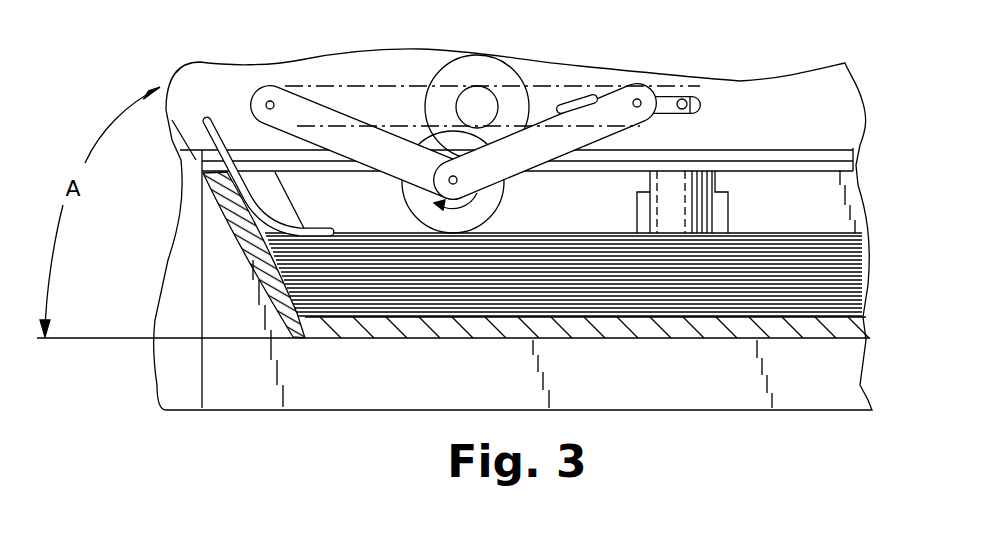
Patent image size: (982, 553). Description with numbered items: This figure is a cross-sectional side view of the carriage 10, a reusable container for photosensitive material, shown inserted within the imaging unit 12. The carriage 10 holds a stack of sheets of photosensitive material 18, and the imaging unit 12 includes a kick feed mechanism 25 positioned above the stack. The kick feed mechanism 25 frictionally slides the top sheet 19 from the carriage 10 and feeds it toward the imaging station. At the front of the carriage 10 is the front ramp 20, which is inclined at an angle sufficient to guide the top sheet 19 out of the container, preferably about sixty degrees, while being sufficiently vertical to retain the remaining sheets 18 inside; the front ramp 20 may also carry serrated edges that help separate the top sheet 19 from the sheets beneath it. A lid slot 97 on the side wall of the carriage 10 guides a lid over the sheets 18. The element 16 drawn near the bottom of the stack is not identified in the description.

The base plate 10 is at (667, 340).
The housing 12 is at (668, 76).
The bottom sheet 16 is at (807, 317).
The sheet stack 18 is at (591, 266).
The guide member 19 is at (214, 128).
The inclined plate 20 is at (233, 219).
The pick roller linkage 25 is at (334, 114).
The rail 97 is at (788, 161).